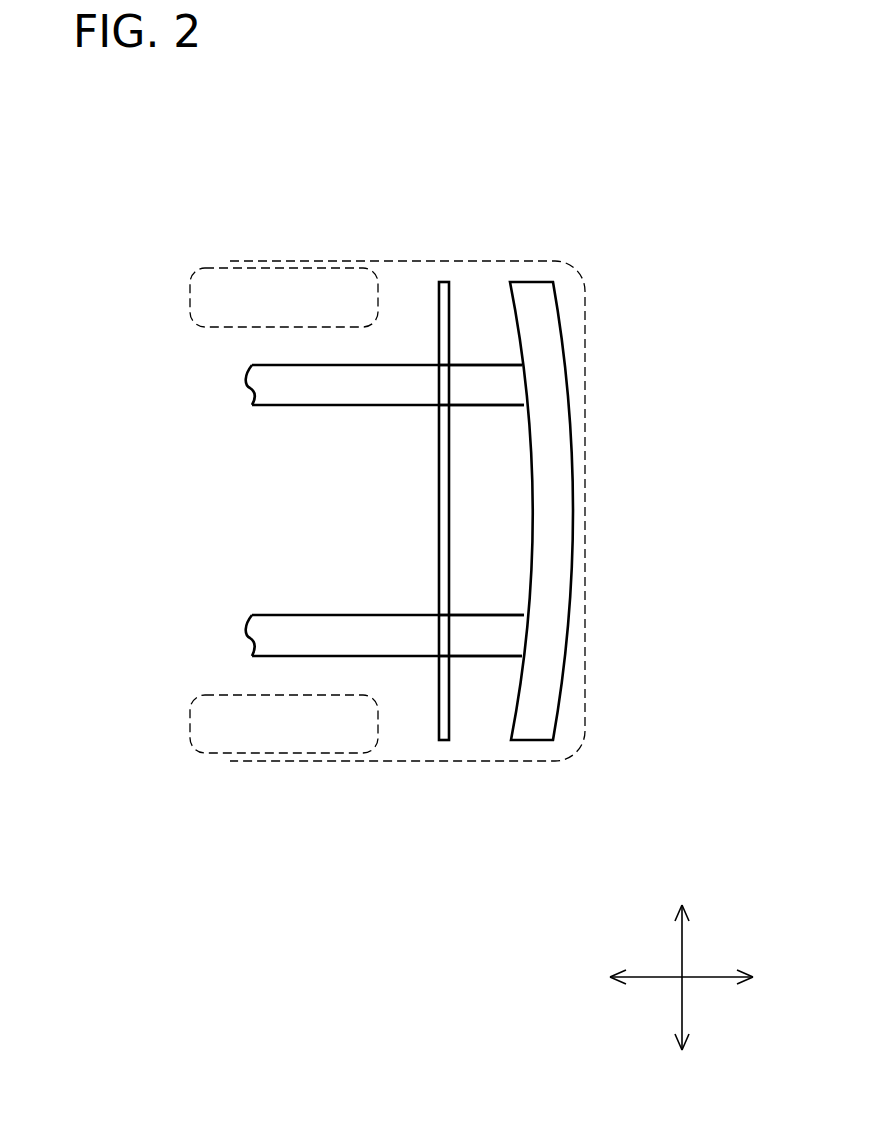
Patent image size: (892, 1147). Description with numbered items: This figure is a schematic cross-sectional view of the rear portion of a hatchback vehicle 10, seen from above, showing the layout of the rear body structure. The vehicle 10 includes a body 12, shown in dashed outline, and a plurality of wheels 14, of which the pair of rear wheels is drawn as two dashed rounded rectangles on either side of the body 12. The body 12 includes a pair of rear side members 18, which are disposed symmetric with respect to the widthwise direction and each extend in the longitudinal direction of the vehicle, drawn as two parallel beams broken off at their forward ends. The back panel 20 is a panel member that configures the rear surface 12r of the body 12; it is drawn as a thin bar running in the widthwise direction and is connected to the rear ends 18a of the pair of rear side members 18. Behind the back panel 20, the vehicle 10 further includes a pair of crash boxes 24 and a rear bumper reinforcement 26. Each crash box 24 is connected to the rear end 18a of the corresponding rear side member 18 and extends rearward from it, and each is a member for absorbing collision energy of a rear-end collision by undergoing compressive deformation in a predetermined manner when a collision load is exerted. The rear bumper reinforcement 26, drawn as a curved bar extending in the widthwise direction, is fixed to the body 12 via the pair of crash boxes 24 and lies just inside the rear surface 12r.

The vehicle 10 is at (617, 153).
The body 12 is at (380, 260).
The rear surface 12r is at (657, 490).
The wheels 14 is at (220, 268).
The rear side members 18 is at (328, 406).
The rear ends 18a is at (443, 384).
The back panel 20 is at (438, 487).
The crash boxes 24 is at (490, 364).
The rear bumper reinforcement 26 is at (548, 344).